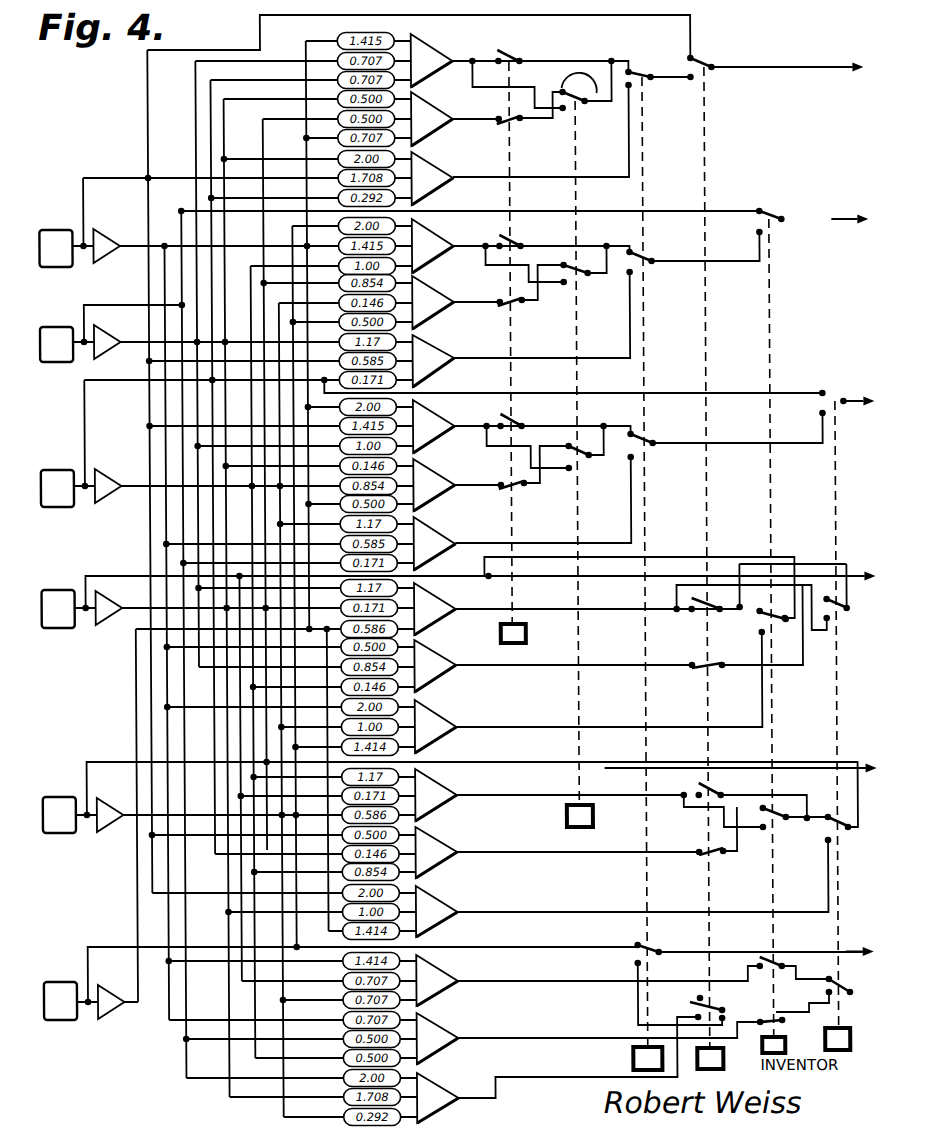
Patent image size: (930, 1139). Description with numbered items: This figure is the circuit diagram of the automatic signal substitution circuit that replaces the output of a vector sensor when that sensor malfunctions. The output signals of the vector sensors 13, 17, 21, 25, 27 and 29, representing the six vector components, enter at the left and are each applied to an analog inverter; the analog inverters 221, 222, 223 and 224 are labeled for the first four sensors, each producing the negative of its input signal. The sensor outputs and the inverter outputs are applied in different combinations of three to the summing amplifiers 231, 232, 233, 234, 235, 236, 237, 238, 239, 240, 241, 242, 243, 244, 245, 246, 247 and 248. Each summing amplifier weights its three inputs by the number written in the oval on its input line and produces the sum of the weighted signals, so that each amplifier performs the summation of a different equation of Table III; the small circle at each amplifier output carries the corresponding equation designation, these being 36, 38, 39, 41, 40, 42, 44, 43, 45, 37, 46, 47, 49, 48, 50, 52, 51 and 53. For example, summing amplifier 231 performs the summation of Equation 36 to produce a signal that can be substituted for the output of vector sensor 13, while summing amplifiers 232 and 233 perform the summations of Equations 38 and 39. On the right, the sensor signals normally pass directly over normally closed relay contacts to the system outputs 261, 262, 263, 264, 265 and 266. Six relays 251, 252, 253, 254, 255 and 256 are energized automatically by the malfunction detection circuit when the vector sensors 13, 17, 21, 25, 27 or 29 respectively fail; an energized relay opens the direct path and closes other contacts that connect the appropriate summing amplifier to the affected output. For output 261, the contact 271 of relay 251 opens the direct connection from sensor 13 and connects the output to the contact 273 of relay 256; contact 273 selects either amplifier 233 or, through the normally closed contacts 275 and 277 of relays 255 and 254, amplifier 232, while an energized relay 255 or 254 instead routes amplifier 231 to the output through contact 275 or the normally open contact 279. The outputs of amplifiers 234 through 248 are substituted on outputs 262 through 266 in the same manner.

The vector sensor 13 is at (56, 231).
The vector sensor 17 is at (55, 328).
The vector sensor 21 is at (55, 471).
The vector sensor 25 is at (59, 590).
The vector sensor 27 is at (55, 796).
The vector sensor 29 is at (57, 982).
The analog inverter 221 is at (105, 239).
The analog inverter 222 is at (104, 340).
The analog inverter 223 is at (105, 478).
The analog inverter 224 is at (103, 621).
The equation designation 36 is at (441, 59).
The equation designation 37 is at (445, 607).
The equation designation 38 is at (441, 118).
The equation designation 39 is at (444, 176).
The equation designation 40 is at (445, 300).
The equation designation 41 is at (443, 244).
The equation designation 42 is at (445, 358).
The equation designation 43 is at (446, 483).
The equation designation 44 is at (446, 424).
The equation designation 45 is at (446, 541).
The equation designation 46 is at (446, 664).
The equation designation 47 is at (447, 724).
The equation designation 48 is at (450, 850).
The equation designation 49 is at (447, 793).
The equation designation 50 is at (449, 908).
The equation designation 51 is at (451, 1035).
The equation designation 52 is at (449, 977).
The equation designation 53 is at (451, 1094).
The summing amplifier 231 is at (427, 58).
The summing amplifier 232 is at (441, 127).
The summing amplifier 233 is at (440, 184).
The summing amplifier 234 is at (437, 251).
The summing amplifier 235 is at (445, 306).
The summing amplifier 236 is at (444, 364).
The summing amplifier 237 is at (433, 433).
The summing amplifier 238 is at (439, 491).
The summing amplifier 239 is at (438, 549).
The summing amplifier 240 is at (442, 611).
The summing amplifier 241 is at (445, 674).
The summing amplifier 242 is at (448, 732).
The summing amplifier 243 is at (446, 801).
The summing amplifier 244 is at (456, 855).
The summing amplifier 245 is at (443, 917).
The summing amplifier 246 is at (445, 987).
The summing amplifier 247 is at (441, 1046).
The summing amplifier 248 is at (437, 1107).
The contact of relay 251 271 is at (712, 66).
The contact of relay 256 273 is at (645, 65).
The normally closed contact of relay 255 275 is at (589, 102).
The normally closed contact of relay 254 277 is at (520, 128).
The normally open contact of relay 254 279 is at (520, 55).
The output 261 is at (810, 65).
The output 262 is at (805, 219).
The output 263 is at (841, 386).
The output 264 is at (849, 575).
The output 265 is at (819, 767).
The output 266 is at (842, 951).
The relay 251 is at (717, 1058).
The relay 252 is at (762, 1034).
The relay 253 is at (820, 1040).
The relay 254 is at (522, 638).
The relay 255 is at (571, 829).
The relay 256 is at (628, 1060).